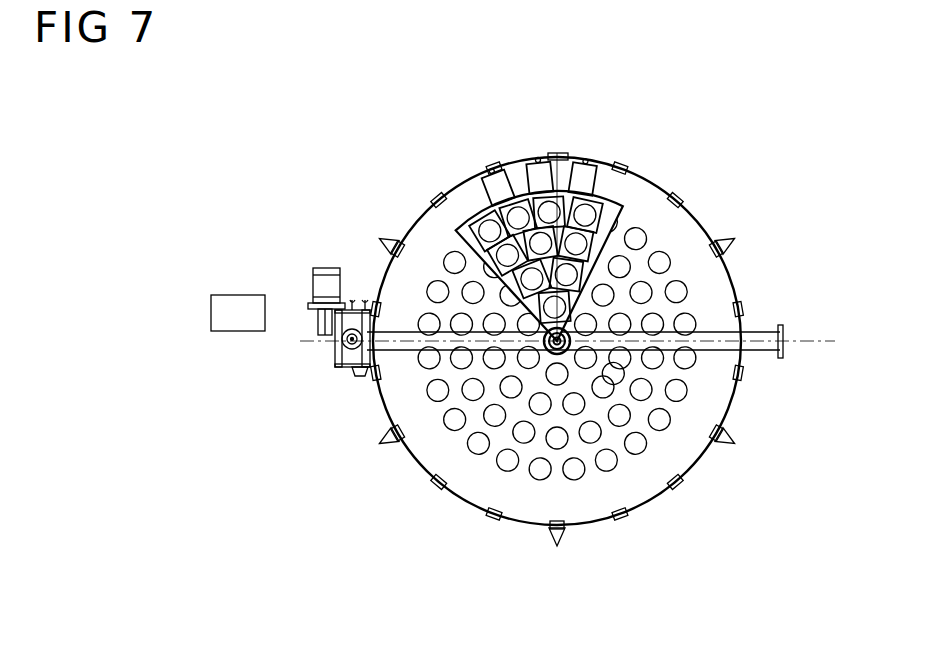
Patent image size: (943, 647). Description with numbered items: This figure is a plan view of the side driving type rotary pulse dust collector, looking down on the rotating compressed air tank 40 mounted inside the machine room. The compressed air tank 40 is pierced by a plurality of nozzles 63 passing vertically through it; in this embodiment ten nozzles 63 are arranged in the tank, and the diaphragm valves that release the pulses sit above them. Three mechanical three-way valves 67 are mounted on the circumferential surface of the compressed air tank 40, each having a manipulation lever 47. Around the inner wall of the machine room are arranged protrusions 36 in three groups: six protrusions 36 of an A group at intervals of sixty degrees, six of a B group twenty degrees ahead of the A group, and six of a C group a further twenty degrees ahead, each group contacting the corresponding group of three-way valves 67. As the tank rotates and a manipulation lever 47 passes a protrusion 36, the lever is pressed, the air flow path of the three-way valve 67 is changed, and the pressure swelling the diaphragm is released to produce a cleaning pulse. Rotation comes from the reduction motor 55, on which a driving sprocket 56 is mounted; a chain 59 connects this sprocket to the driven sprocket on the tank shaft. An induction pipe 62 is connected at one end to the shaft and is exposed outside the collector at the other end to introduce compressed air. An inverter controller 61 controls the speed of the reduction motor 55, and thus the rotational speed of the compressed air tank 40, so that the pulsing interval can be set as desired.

The protrusion 36 is at (433, 196).
The compressed air tank 40 is at (616, 212).
The manipulation lever 47 is at (566, 151).
The reduction motor 55 is at (318, 283).
The driving sprocket 56 is at (337, 358).
The chain 59 is at (363, 371).
The inverter controller 61 is at (236, 310).
The induction pipe 62 is at (757, 333).
The nozzle 63 is at (665, 256).
The mechanical 3-way valve 67 is at (589, 162).